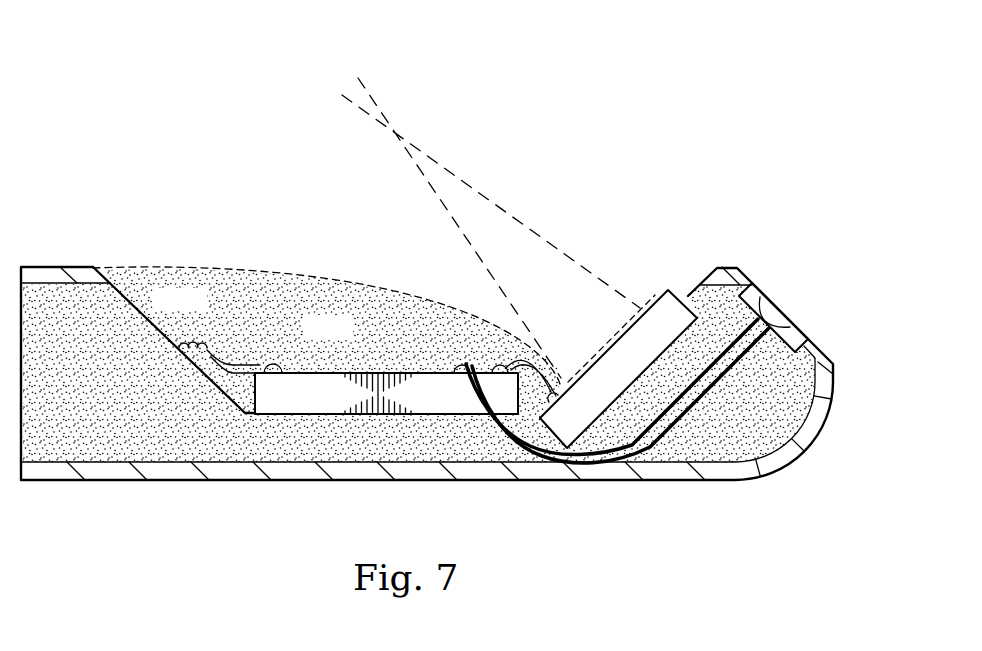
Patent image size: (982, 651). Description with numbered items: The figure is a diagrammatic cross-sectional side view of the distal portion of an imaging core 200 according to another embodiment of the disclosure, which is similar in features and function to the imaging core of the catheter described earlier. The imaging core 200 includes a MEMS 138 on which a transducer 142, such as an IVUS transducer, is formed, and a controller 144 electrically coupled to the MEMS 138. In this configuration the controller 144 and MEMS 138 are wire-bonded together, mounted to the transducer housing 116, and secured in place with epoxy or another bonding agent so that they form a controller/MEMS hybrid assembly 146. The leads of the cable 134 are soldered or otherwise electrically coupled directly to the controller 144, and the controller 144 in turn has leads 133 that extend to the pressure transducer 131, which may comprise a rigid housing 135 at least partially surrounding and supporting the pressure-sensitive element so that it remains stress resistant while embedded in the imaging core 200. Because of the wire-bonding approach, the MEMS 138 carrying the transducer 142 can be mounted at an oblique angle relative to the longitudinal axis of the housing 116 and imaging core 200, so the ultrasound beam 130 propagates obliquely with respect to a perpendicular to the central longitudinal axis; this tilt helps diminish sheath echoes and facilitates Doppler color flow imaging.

The imaging core 200 is at (232, 133).
The transducer housing 116 is at (673, 481).
The ultrasound beam 130 is at (438, 158).
The pressure transducer 131 is at (776, 314).
The leads 133 is at (570, 461).
The cable 134 is at (192, 343).
The rigid housing 135 is at (823, 353).
The MEMS 138 is at (657, 290).
The transducer 142 is at (620, 347).
The controller 144 is at (340, 372).
The controller/MEMS hybrid assembly 146 is at (466, 430).